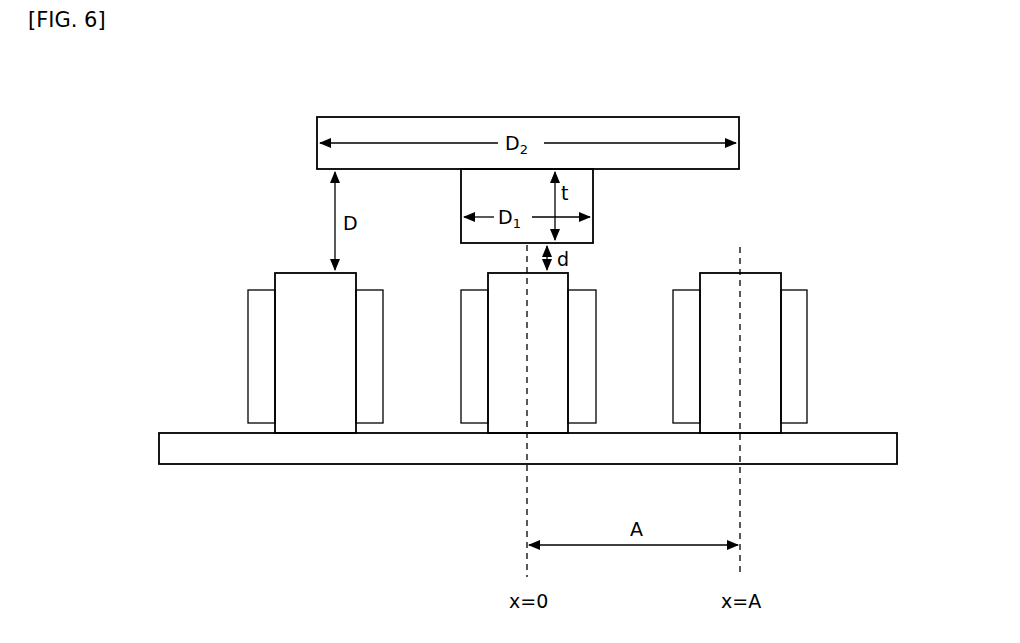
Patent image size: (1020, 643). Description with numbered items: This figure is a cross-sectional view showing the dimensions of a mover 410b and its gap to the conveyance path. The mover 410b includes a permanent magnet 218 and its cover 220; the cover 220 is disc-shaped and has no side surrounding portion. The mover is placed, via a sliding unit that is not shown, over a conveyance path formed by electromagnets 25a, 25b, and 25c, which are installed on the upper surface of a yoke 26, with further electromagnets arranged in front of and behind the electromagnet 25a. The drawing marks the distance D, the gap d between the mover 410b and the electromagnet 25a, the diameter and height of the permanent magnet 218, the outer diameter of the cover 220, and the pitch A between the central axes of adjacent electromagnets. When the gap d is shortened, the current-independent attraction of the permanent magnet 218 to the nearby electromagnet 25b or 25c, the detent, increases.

The mover 410b is at (475, 139).
The cover 220 is at (316, 143).
The permanent magnet 218 is at (594, 199).
The electromagnet 25a is at (461, 287).
The electromagnet 25b is at (255, 274).
The electromagnet 25c is at (812, 286).
The yoke 26 is at (200, 433).